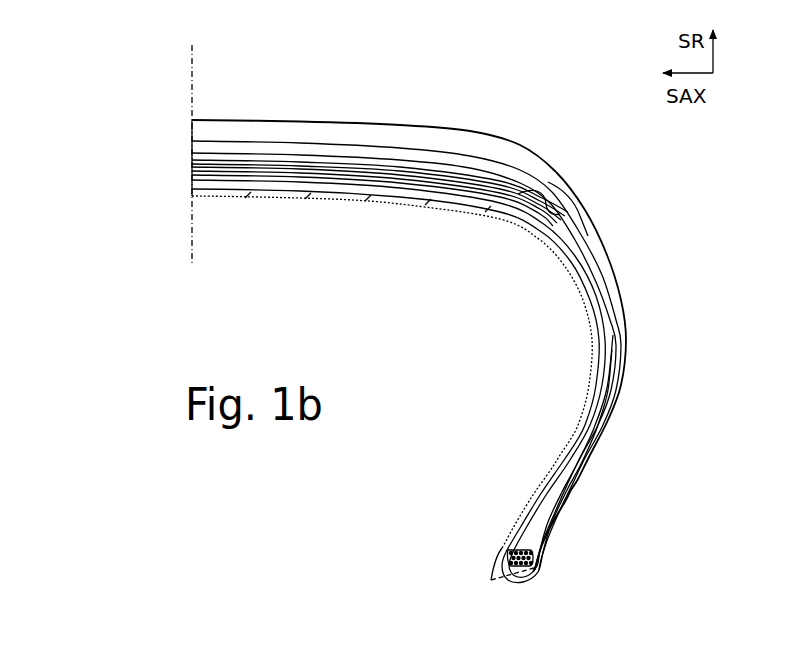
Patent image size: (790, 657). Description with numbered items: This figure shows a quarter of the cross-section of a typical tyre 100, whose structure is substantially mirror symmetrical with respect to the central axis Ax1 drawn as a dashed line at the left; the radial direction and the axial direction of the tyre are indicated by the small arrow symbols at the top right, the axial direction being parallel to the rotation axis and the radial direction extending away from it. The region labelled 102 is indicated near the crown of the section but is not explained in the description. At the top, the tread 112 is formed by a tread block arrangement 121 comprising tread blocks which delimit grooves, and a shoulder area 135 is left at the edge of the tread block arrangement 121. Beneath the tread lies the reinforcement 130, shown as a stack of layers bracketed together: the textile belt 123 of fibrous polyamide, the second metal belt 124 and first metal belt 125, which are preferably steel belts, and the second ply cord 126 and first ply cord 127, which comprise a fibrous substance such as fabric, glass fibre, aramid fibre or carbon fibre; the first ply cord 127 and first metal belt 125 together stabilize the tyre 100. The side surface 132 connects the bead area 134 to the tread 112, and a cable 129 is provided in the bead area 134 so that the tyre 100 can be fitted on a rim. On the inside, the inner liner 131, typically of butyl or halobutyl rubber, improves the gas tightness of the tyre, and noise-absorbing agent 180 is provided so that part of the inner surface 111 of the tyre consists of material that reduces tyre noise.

The tyre 100 is at (431, 60).
The tread portion 102 is at (148, 103).
The central axis Ax1 is at (192, 80).
The inner surface 111 is at (418, 233).
The tread 112 is at (439, 118).
The tread block arrangement 121 is at (237, 130).
The textile belt 123 is at (192, 157).
The second metal belt 124 is at (192, 162).
The first metal belt 125 is at (192, 169).
The second ply cord 126 is at (192, 178).
The first ply cord 127 is at (192, 184).
The cable 129 is at (524, 561).
The reinforcement 130 is at (80, 113).
The inner liner 131 is at (597, 387).
The side surface 132 is at (615, 413).
The bead area 134 is at (510, 574).
The shoulder area 135 is at (580, 214).
The noise-absorbing agent 180 is at (292, 192).